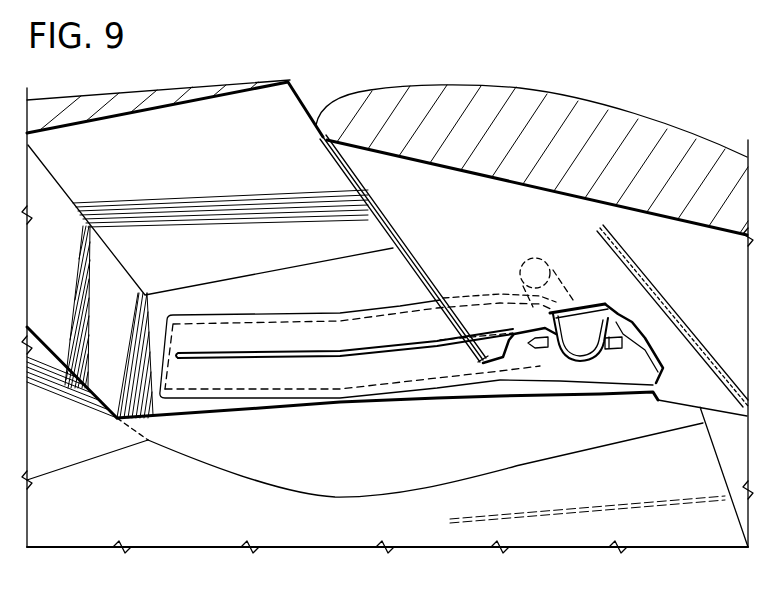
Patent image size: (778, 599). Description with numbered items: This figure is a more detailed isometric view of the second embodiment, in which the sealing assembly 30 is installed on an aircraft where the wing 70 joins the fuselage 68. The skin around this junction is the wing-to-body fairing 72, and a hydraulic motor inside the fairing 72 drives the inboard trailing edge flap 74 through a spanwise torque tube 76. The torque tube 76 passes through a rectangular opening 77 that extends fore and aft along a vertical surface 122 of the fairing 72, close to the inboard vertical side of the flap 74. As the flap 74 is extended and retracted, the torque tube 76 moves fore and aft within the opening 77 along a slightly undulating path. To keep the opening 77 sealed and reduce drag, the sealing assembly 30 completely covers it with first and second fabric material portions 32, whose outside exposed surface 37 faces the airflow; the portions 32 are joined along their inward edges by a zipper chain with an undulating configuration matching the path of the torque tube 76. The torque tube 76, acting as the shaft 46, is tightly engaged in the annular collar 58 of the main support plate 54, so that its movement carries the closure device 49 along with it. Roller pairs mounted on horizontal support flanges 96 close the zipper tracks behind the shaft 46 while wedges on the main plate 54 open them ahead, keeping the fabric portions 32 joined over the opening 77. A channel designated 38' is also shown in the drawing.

The wing 70 is at (163, 88).
The inboard trailing edge flap 74 is at (597, 115).
The torque tube 76 is at (519, 268).
The shaft 46 is at (600, 313).
The main support plate 54 is at (622, 327).
The horizontal support flanges 96 is at (542, 349).
The closure device 49 is at (609, 373).
The annular collar 58 is at (567, 358).
The sealing assembly 30 is at (374, 372).
The material portions 32 is at (363, 378).
The channel 38' is at (352, 419).
The rectangular opening 77 is at (268, 360).
The outside exposed surface 37 is at (280, 390).
The vertical surface 122 is at (176, 410).
The fuselage 68 is at (98, 535).
The wing-to-body fairing 72 is at (338, 508).